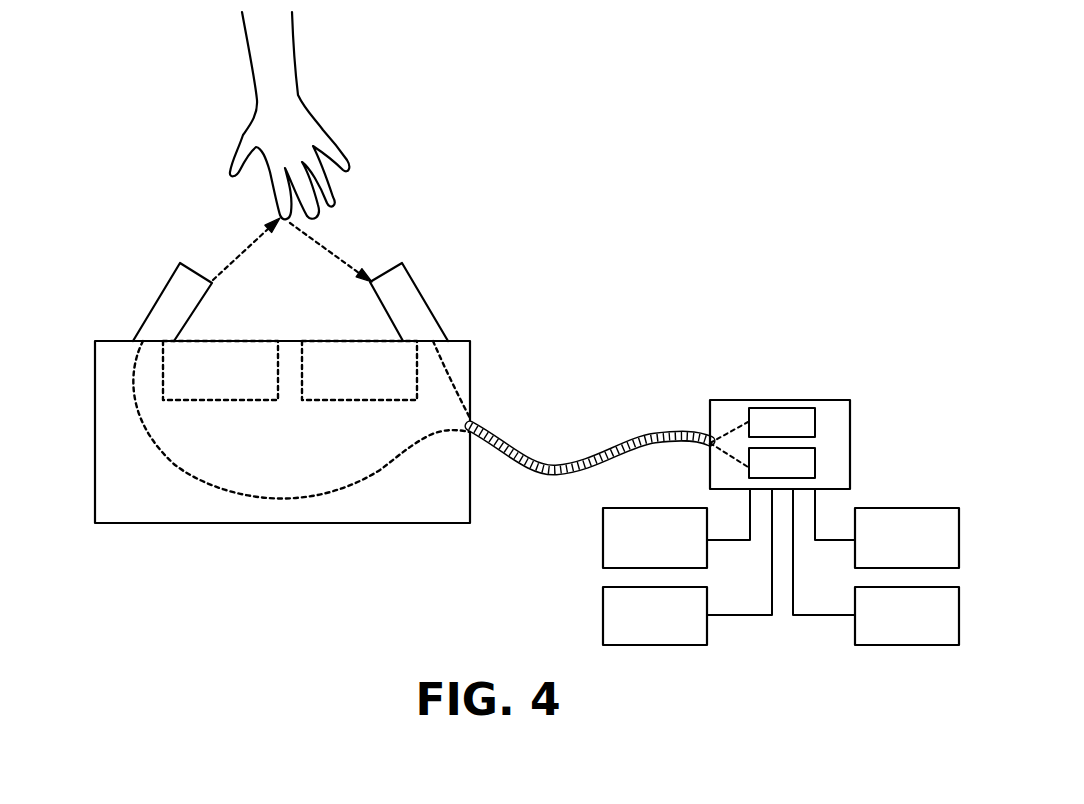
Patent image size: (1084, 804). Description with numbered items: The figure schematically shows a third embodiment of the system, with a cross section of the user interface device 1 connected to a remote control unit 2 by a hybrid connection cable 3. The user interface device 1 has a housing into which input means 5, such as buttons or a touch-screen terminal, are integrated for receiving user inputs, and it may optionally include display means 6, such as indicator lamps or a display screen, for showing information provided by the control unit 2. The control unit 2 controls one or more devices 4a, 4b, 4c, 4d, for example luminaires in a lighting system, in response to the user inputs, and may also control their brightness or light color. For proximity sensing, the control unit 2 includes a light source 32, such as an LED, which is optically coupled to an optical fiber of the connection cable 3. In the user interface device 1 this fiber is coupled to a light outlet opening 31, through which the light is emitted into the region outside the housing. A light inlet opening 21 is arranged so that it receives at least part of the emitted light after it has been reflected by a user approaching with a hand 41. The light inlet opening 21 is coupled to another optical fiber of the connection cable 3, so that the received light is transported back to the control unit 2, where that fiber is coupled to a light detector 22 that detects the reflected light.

The user interface device 1 is at (150, 586).
The control unit 2 is at (823, 386).
The connection cable 3 is at (650, 437).
The input means 5 is at (223, 400).
The display means 6 is at (345, 400).
The light inlet opening 21 is at (403, 298).
The light detector 22 is at (808, 463).
The light outlet opening 31 is at (178, 293).
The light source 32 is at (782, 417).
The hand 41 is at (298, 125).
The controlled device 4a is at (655, 538).
The controlled device 4b is at (655, 616).
The controlled device 4c is at (907, 538).
The controlled device 4d is at (907, 616).